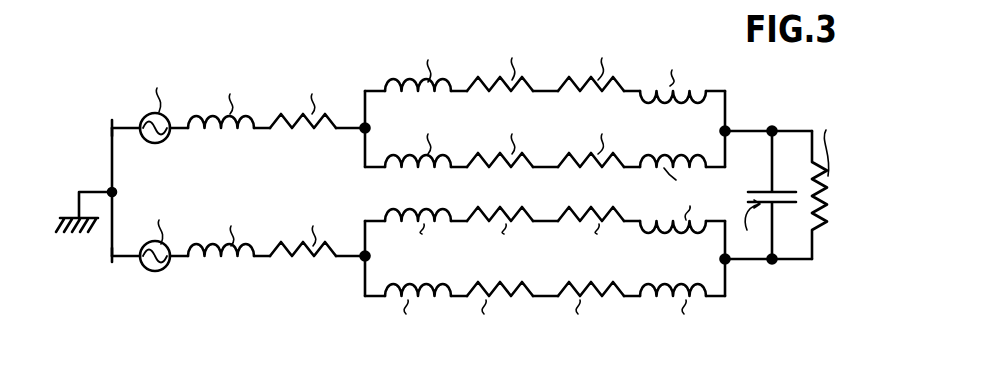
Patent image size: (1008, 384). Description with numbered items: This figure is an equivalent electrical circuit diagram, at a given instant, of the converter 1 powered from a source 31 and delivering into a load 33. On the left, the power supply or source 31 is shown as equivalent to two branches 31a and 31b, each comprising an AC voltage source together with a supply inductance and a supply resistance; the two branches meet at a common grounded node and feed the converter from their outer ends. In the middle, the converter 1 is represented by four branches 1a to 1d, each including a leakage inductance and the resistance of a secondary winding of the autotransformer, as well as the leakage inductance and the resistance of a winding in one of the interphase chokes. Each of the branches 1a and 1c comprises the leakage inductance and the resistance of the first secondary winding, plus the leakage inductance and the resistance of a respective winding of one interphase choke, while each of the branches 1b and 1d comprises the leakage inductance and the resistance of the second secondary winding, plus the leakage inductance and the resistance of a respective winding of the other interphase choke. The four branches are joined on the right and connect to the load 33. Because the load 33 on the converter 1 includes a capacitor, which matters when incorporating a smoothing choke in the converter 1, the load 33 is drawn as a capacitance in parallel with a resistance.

The converter 1 is at (538, 314).
The branch 1a is at (362, 86).
The branch 1b is at (362, 159).
The branch 1c is at (362, 219).
The branch 1d is at (364, 286).
The source 31 is at (233, 268).
The branch 31a is at (123, 124).
The branch 31b is at (122, 258).
The load 33 is at (783, 285).